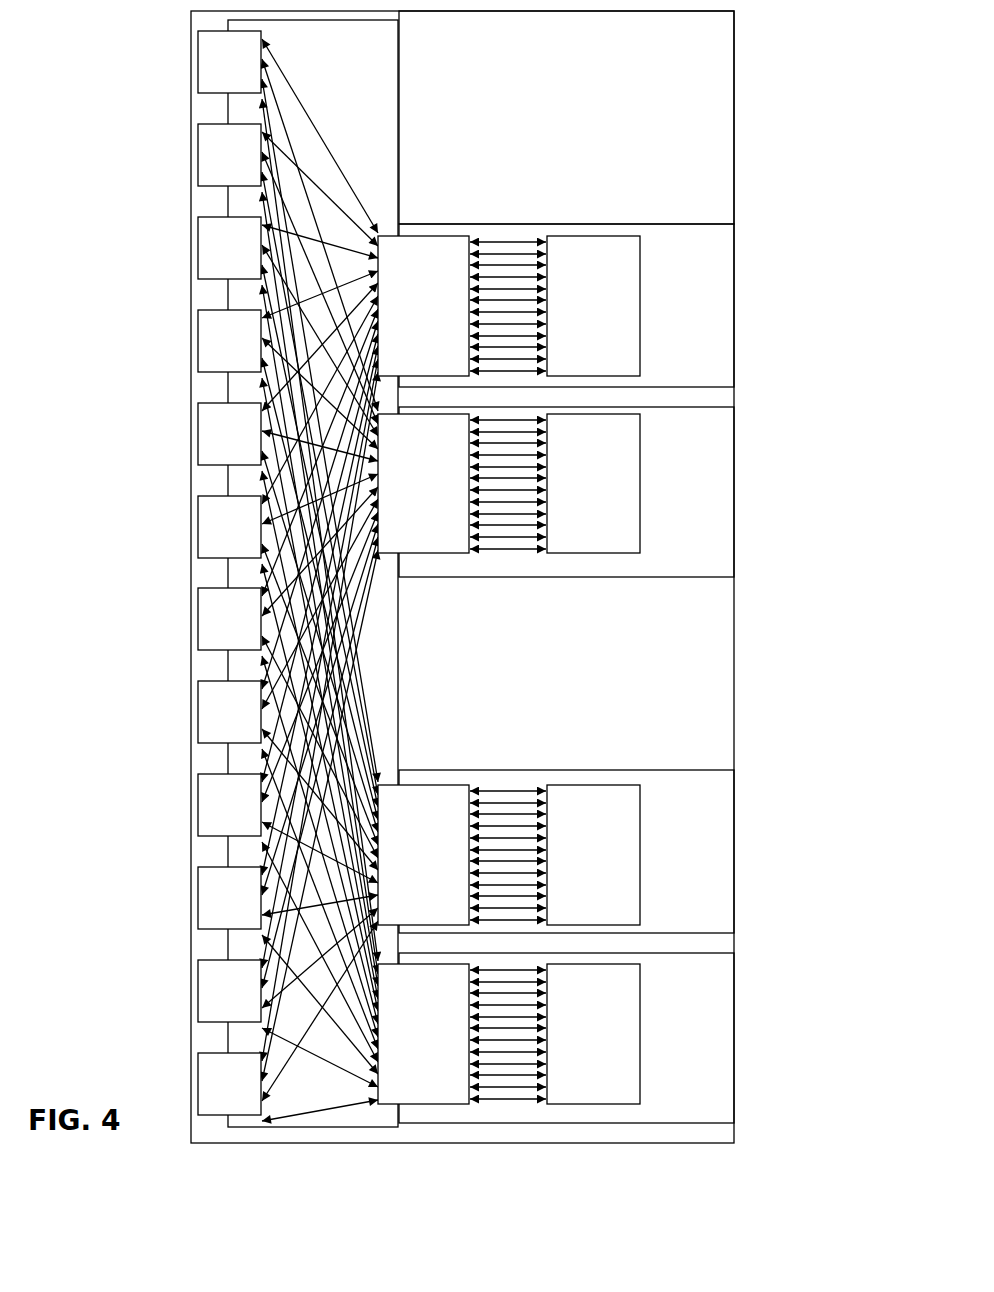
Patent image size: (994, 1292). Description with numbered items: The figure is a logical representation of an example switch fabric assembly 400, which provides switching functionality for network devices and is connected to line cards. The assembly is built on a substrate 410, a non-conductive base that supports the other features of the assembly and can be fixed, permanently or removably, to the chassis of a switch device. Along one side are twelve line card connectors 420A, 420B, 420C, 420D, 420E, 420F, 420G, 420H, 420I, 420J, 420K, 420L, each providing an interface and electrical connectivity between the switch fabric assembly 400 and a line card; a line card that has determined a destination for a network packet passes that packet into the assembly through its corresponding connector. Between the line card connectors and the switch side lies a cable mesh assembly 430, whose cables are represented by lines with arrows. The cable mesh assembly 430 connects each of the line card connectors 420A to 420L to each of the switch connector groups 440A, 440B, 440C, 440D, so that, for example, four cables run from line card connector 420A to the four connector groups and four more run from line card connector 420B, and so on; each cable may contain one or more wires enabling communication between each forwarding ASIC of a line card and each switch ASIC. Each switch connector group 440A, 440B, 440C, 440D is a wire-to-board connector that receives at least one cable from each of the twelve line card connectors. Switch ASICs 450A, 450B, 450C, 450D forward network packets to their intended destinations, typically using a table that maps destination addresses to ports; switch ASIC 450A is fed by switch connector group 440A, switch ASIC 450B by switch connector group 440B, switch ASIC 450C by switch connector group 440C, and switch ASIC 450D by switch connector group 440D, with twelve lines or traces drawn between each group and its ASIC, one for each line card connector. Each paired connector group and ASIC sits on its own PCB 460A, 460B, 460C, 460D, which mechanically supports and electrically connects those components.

The switch fabric assembly 400 is at (122, 62).
The substrate 410 is at (566, 117).
The line card connector 420A is at (229, 1084).
The line card connector 420B is at (229, 991).
The line card connector 420C is at (229, 898).
The line card connector 420D is at (229, 805).
The line card connector 420E is at (229, 712).
The line card connector 420F is at (229, 619).
The line card connector 420G is at (229, 527).
The line card connector 420H is at (229, 434).
The line card connector 420I is at (229, 341).
The line card connector 420J is at (229, 248).
The line card connector 420K is at (229, 155).
The line card connector 420L is at (229, 62).
The cable mesh assembly 430 is at (313, 573).
The switch connector group 440A is at (423, 1034).
The switch connector group 440B is at (423, 855).
The switch connector group 440C is at (423, 483).
The switch connector group 440D is at (423, 306).
The switch ASIC 450A is at (593, 1034).
The switch ASIC 450B is at (593, 855).
The switch ASIC 450C is at (593, 483).
The switch ASIC 450D is at (593, 306).
The PCB 460A is at (603, 1038).
The PCB 460B is at (602, 851).
The PCB 460C is at (602, 492).
The PCB 460D is at (603, 305).